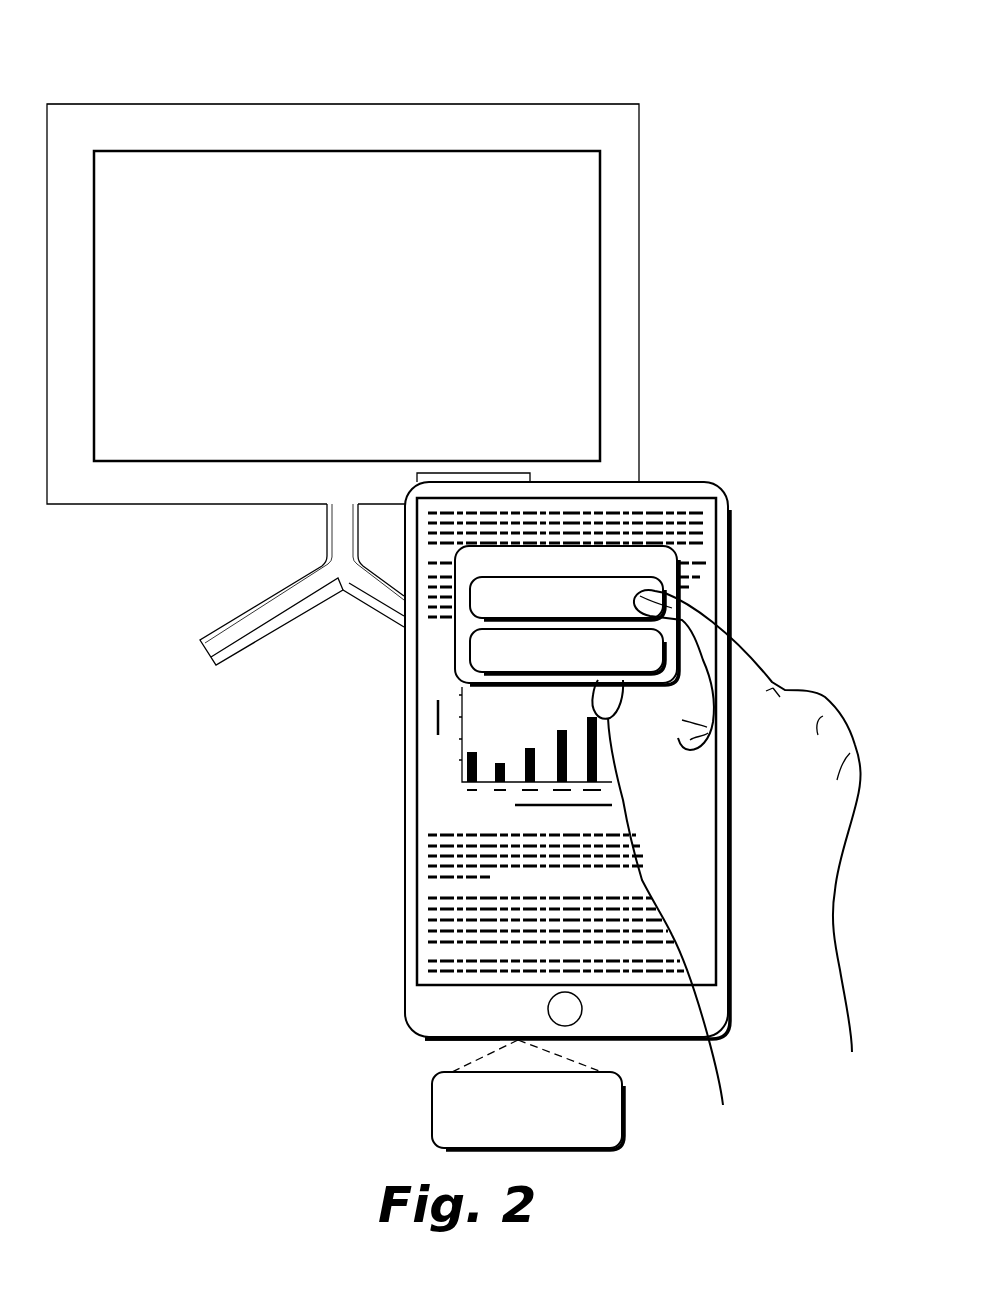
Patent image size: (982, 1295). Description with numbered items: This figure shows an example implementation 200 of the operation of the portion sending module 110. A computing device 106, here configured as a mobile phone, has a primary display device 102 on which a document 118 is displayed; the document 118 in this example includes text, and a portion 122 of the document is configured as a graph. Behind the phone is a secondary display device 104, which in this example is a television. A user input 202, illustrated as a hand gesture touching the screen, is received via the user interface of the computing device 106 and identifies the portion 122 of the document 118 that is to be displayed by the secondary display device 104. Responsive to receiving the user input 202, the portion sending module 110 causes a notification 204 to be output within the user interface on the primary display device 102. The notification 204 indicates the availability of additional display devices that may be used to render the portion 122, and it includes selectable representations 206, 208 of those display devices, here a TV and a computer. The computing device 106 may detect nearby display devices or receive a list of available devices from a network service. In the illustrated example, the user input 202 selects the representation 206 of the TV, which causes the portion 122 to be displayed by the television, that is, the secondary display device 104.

The implementation 200 is at (106, 40).
The secondary display device 104 is at (490, 104).
The primary display device 102 is at (726, 556).
The document 118 is at (422, 885).
The portion of the document 122 is at (428, 680).
The notification 204 is at (624, 573).
The representation of the TV 206 is at (604, 606).
The representation of the computer 208 is at (633, 660).
The user input 202 is at (765, 846).
The portion sending module 110 is at (582, 1133).
The computing device 106 is at (420, 1040).